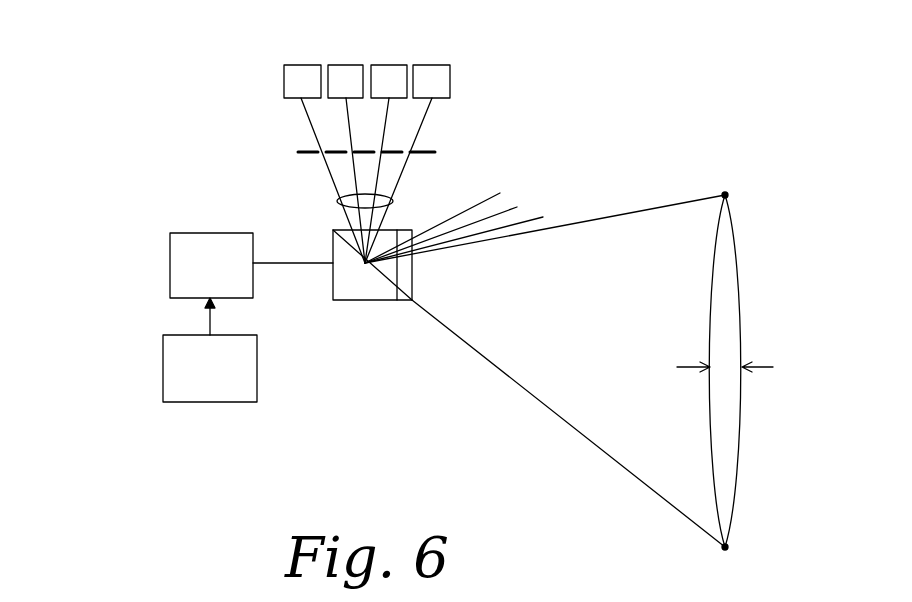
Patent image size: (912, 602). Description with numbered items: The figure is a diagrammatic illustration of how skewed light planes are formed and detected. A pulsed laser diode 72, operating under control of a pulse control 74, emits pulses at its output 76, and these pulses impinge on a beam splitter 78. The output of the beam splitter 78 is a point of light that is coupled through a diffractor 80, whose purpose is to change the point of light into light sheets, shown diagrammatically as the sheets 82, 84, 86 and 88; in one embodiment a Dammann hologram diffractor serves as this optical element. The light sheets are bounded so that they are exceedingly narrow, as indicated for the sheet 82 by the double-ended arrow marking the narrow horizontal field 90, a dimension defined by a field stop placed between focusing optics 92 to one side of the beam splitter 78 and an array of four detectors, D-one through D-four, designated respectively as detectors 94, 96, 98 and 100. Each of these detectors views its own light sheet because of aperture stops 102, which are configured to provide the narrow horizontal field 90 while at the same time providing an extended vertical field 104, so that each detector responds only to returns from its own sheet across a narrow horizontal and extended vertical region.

The pulsed laser diode 72 is at (170, 257).
The pulse control 74 is at (205, 402).
The output 76 is at (310, 263).
The beam splitter 78 is at (350, 300).
The diffractor 80 is at (404, 300).
The light sheet 82 is at (540, 232).
The light sheet 84 is at (542, 220).
The light sheet 86 is at (520, 205).
The light sheet 88 is at (506, 190).
The narrow horizontal field 90 is at (716, 360).
The focusing optics 92 is at (338, 201).
The detector D1 94 is at (291, 65).
The detector D2 96 is at (340, 65).
The detector D3 98 is at (388, 65).
The detector D4 100 is at (433, 65).
The aperture stops 102 is at (284, 144).
The extended vertical field 104 is at (760, 555).